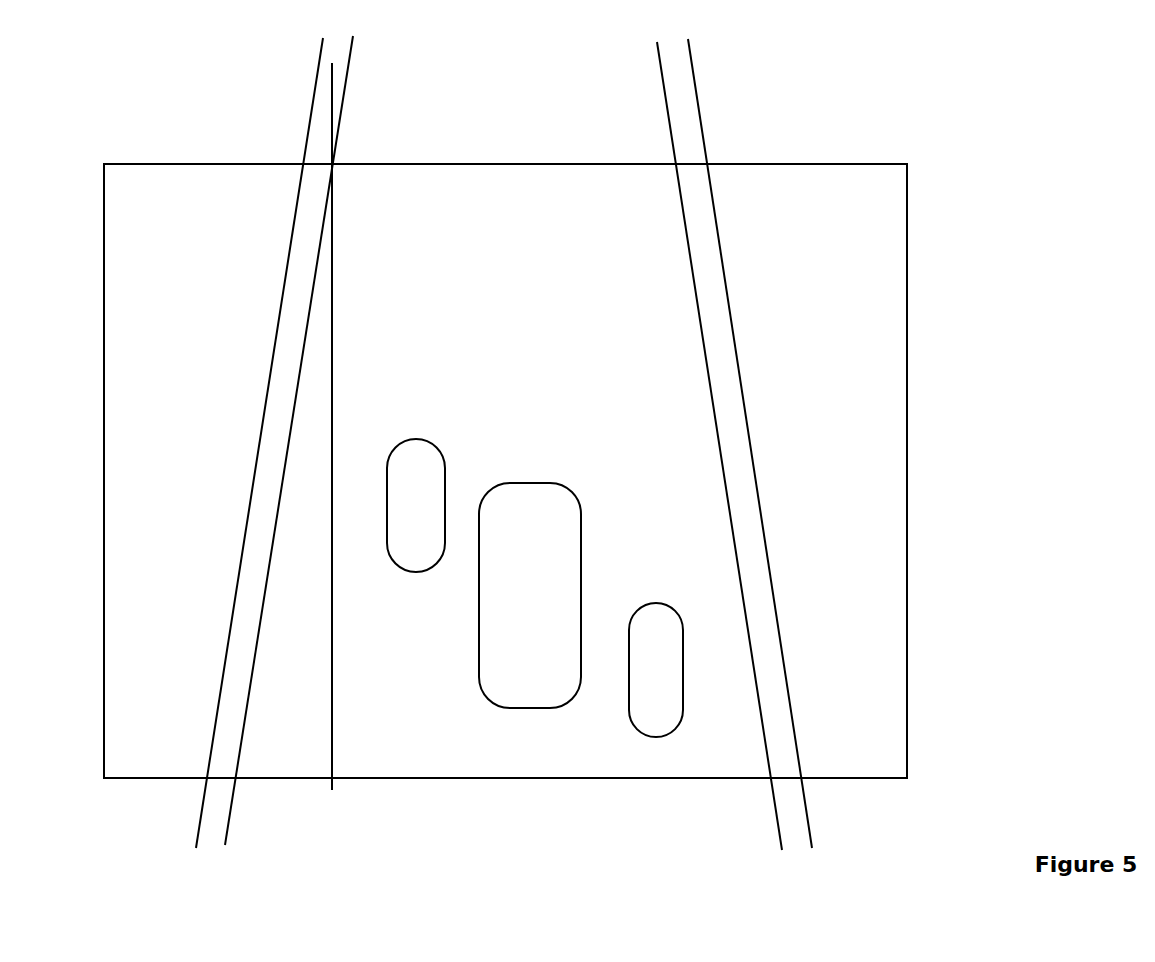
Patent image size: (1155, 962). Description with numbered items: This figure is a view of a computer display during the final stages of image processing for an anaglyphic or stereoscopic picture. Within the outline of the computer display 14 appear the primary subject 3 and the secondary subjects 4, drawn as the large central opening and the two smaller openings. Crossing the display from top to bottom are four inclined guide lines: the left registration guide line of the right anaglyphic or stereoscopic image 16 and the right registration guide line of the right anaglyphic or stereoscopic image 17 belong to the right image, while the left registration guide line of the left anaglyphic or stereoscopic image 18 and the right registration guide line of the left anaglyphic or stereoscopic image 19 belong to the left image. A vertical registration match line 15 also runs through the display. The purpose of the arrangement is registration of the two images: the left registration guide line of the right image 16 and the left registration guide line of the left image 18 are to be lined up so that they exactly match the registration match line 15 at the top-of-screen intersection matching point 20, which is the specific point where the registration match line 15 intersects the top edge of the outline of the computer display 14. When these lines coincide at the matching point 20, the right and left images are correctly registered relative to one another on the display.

The primary subject 3 is at (474, 630).
The secondary subjects 4 is at (585, 450).
The outline of the computer display 14 is at (918, 439).
The registration match line 15 is at (341, 371).
The left registration guide line of the right anaglyphic or stereoscopic image 16 is at (344, 177).
The right registration guide line of the right anaglyphic or stereoscopic image 17 is at (236, 832).
The left registration guide line of the left anaglyphic or stereoscopic image 18 is at (705, 72).
The right registration guide line of the left anaglyphic or stereoscopic image 19 is at (305, 72).
The top-of-screen intersection matching point 20 is at (773, 833).